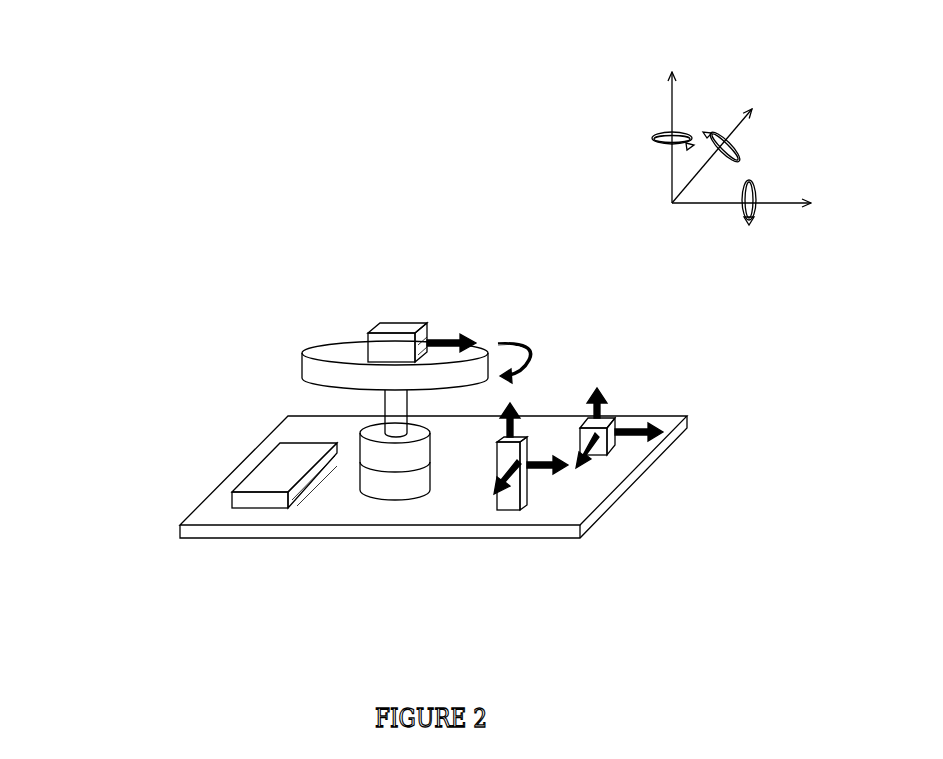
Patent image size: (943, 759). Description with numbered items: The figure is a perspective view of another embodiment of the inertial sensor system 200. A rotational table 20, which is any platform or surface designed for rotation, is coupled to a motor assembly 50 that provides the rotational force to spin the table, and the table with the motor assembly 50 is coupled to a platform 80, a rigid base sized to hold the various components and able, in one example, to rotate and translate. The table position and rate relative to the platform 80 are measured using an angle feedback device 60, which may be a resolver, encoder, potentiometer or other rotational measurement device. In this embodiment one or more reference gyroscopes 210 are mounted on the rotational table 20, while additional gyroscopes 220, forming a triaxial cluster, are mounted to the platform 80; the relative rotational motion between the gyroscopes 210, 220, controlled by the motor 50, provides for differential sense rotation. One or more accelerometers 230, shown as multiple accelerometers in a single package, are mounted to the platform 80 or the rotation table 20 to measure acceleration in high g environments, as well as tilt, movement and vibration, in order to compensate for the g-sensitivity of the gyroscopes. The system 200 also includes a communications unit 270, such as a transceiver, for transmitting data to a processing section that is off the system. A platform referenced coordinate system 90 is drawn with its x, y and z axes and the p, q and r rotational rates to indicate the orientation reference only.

The inertial sensor system 200 is at (303, 201).
The rotational table 20 is at (298, 367).
The motor assembly 50 is at (357, 445).
The angle feedback device 60 is at (357, 473).
The platform 80 is at (377, 527).
The platform referenced coordinate system 90 is at (642, 185).
The reference gyroscopes 210 is at (415, 325).
The additional gyroscopes 220 is at (610, 417).
The accelerometers 230 is at (527, 478).
The communications unit 270 is at (232, 499).